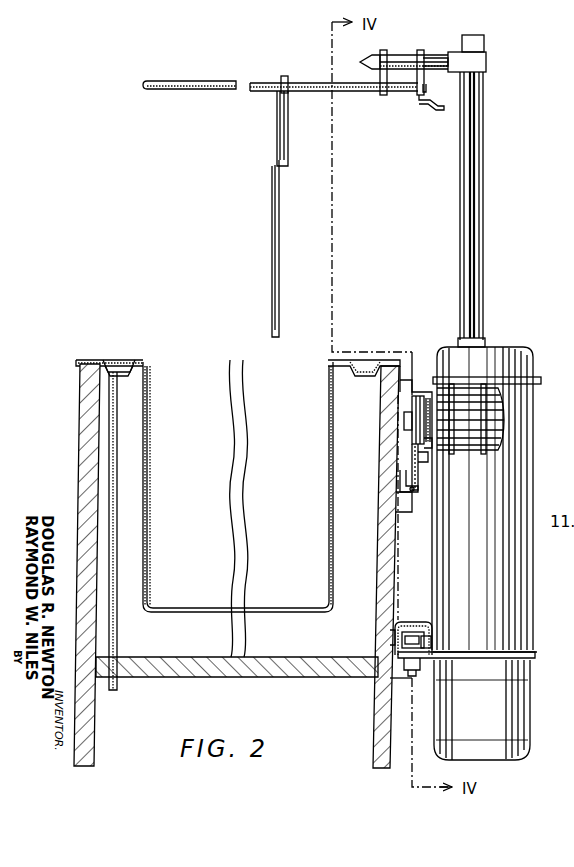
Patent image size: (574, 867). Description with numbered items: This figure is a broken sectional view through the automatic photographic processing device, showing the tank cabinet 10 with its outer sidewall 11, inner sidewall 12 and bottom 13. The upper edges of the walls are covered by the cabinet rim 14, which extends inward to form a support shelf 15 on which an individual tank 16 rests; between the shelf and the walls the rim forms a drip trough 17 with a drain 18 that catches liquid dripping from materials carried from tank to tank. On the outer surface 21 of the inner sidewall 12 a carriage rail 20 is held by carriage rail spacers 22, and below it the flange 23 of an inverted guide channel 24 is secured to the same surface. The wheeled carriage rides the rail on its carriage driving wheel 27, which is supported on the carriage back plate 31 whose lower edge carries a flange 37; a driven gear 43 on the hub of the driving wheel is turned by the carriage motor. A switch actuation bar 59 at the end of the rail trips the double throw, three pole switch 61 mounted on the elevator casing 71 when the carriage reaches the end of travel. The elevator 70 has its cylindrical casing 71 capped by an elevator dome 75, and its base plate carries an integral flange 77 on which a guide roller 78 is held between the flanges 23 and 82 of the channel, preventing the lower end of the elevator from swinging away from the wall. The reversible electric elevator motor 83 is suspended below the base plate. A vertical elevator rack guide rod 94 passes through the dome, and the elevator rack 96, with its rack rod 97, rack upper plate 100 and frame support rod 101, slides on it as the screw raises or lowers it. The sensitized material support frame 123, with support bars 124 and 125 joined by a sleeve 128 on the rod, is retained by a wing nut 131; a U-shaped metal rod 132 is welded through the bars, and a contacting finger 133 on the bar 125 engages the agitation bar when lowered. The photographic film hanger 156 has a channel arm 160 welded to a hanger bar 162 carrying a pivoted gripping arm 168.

The cabinet 10 is at (70, 410).
The outer sidewall 11 is at (88, 462).
The inner sidewall 12 is at (378, 720).
The bottom 13 is at (176, 674).
The cabinet rim 14 is at (84, 358).
The support shelf 15 is at (145, 370).
The tank 16 is at (174, 612).
The drip trough 17 is at (121, 370).
The drain 18 is at (116, 470).
The carriage rail 20 is at (424, 492).
The outer surface 21 is at (394, 752).
The carriage rail spacer 22 is at (406, 456).
The flange 23 is at (394, 637).
The inverted guide channel 24 is at (426, 618).
The carriage driving wheel 27 is at (390, 409).
The carriage back plate 31 is at (421, 394).
The flange 37 is at (421, 470).
The driven gear 43 is at (430, 452).
The switch actuation bar 59 is at (398, 486).
The double throw, three pole switch 61 is at (410, 512).
The elevator 70 is at (530, 344).
The elevator casing 71 is at (520, 472).
The elevator dome 75 is at (492, 346).
The flange 77 is at (436, 664).
The guide roller 78 is at (432, 641).
The flange 82 is at (432, 632).
The electric elevator motor 83 is at (518, 736).
The elevator rack guide rod 94 is at (484, 136).
The elevator rack 96 is at (485, 180).
The rack rod 97 is at (478, 156).
The rack upper plate 100 is at (488, 63).
The frame support rod 101 is at (440, 57).
The sensitized material support frame 123 is at (332, 94).
The support bar 124 is at (384, 96).
The support bar 125 is at (417, 100).
The sleeve 128 is at (400, 56).
The wing nut 131 is at (368, 60).
The U-shaped metal rod 132 is at (196, 90).
The contacting finger 133 is at (434, 108).
The photographic film hanger 156 is at (270, 206).
The channel arm 160 is at (278, 252).
The hanger bar 162 is at (283, 80).
The gripping arm 168 is at (284, 121).